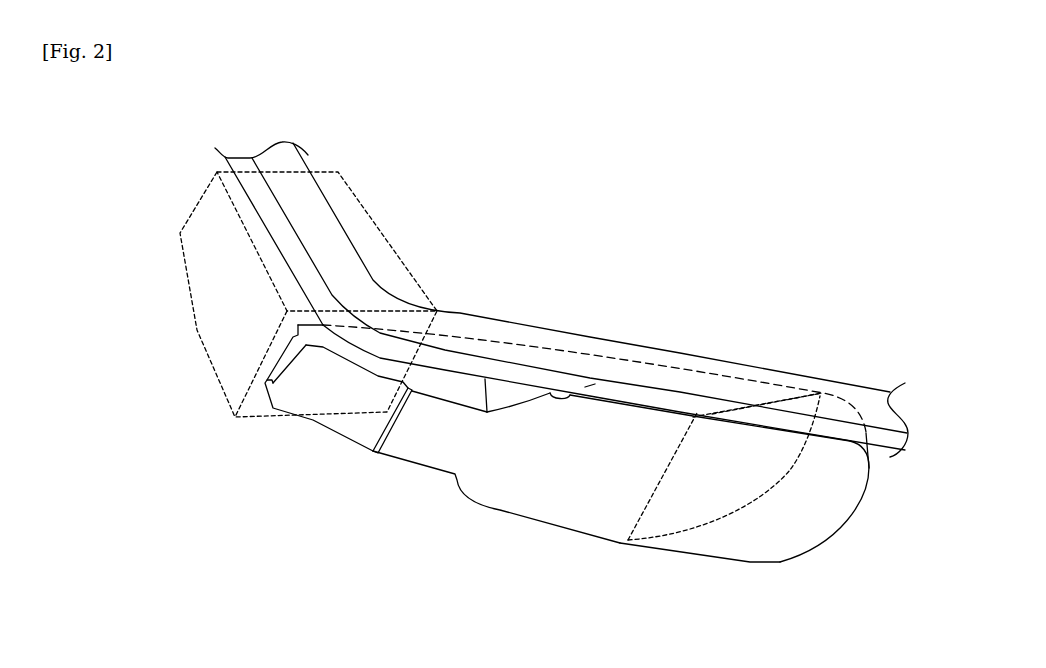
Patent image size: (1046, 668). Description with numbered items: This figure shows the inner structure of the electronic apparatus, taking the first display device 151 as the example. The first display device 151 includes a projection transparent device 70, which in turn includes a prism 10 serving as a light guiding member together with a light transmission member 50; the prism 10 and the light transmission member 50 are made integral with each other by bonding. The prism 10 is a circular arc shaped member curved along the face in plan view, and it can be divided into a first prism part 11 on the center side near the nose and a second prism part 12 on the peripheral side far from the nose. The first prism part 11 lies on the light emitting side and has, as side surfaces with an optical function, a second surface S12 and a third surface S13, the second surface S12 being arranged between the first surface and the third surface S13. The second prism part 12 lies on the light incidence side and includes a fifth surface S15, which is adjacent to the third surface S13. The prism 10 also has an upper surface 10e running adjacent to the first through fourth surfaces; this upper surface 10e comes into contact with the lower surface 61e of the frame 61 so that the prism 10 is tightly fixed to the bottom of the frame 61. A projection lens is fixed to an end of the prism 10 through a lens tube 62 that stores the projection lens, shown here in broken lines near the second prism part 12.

The first display device 151 is at (780, 192).
The lens tube 62 is at (377, 233).
The frame 61 is at (708, 365).
The lower surface of the frame 61e is at (560, 393).
The third surface S13 is at (603, 420).
The upper surface of the prism 10e is at (757, 392).
The second prism part 12 is at (355, 420).
The fifth surface S15 is at (327, 405).
The first prism part 11 is at (550, 503).
The prism 10 is at (587, 535).
The light transmission member 50 is at (820, 548).
The second surface S12 is at (713, 493).
The projection transparent device 70 is at (415, 500).